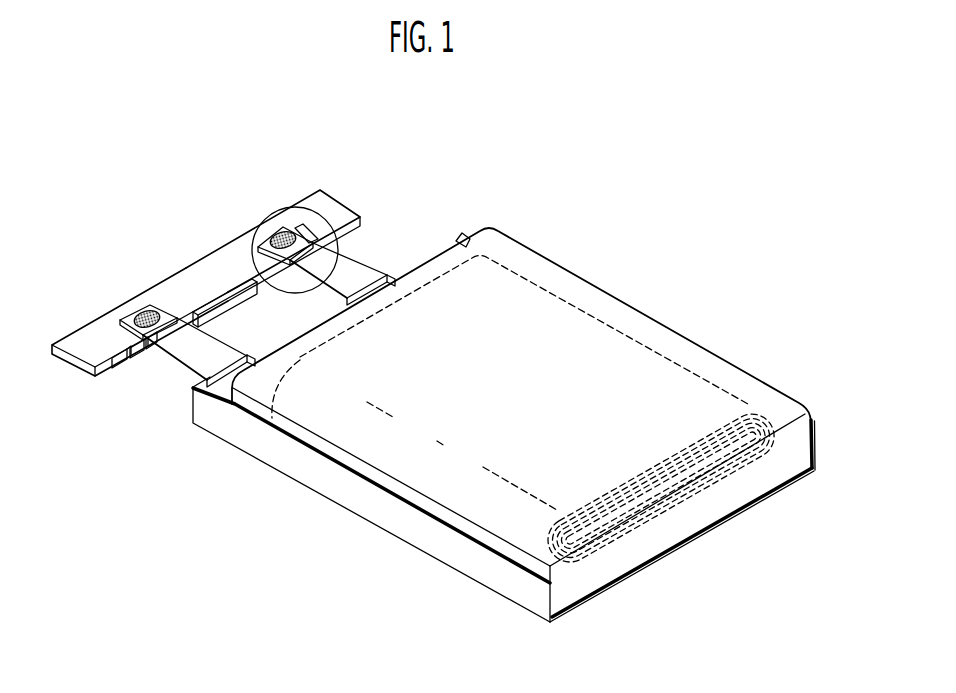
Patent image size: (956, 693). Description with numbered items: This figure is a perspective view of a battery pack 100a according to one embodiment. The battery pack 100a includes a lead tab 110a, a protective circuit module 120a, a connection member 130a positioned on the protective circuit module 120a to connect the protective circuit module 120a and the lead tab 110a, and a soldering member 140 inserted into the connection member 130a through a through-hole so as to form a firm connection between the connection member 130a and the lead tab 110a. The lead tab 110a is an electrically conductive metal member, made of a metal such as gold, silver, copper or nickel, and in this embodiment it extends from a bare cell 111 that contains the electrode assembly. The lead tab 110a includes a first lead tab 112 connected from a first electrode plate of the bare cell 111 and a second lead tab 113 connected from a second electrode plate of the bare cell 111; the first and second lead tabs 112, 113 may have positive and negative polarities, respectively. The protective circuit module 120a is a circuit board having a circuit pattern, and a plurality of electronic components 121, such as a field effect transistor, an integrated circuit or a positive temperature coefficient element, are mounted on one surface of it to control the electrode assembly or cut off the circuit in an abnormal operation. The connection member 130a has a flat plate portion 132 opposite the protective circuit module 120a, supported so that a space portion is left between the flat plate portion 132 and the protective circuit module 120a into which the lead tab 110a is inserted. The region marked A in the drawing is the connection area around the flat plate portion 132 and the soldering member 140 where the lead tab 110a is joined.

The battery pack 100a is at (634, 104).
The lead tab 110a is at (200, 207).
The bare cell 111 is at (598, 270).
The first lead tab 112 is at (213, 348).
The second lead tab 113 is at (215, 348).
The protective circuit module 120a is at (142, 300).
The electronic components 121 is at (118, 371).
The connection member 130a is at (303, 228).
The flat plate portion 132 is at (281, 228).
The soldering member 140 is at (330, 237).
The detail region A is at (265, 215).